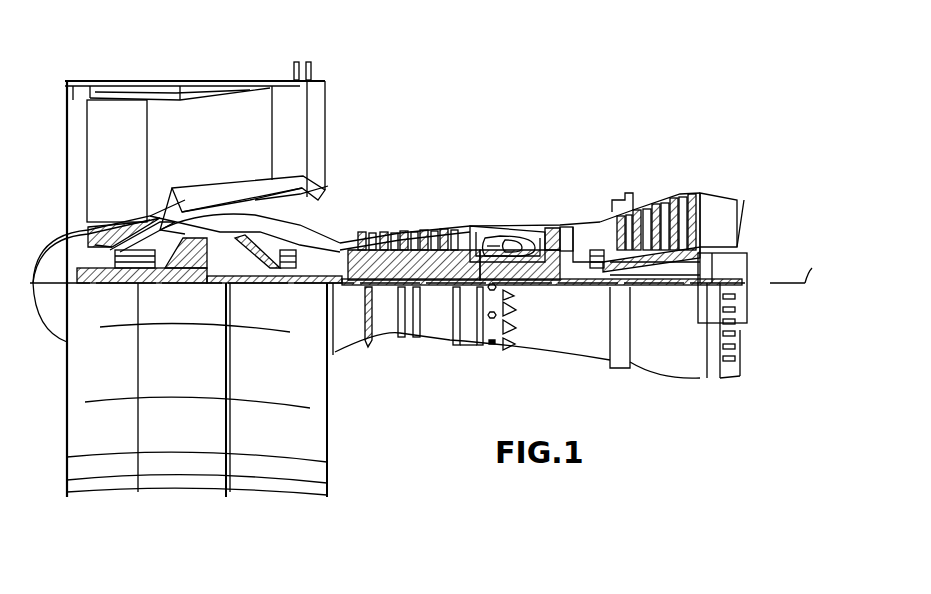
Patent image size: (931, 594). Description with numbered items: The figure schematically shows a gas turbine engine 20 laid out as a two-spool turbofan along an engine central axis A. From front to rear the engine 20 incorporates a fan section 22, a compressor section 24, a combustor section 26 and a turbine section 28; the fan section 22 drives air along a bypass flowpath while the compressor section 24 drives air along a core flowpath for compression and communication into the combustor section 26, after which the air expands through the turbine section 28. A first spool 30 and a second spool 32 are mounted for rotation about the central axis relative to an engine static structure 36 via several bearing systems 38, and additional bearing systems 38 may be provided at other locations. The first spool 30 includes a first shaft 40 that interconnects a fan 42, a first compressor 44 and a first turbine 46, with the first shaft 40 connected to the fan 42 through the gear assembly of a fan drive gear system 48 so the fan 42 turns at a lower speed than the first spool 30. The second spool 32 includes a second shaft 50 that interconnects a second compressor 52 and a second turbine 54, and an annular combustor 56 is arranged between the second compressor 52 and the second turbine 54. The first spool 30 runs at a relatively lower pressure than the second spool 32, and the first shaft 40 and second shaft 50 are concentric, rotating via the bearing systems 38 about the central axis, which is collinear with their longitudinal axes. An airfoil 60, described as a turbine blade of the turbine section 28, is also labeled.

The gas turbine engine 20 is at (528, 112).
The fan section 22 is at (146, 76).
The compressor section 24 is at (366, 216).
The combustor section 26 is at (520, 208).
The turbine section 28 is at (626, 182).
The first spool 30 is at (438, 292).
The second spool 32 is at (470, 248).
The engine static structure 36 is at (467, 350).
The bearing systems 38 is at (293, 285).
The first shaft 40 is at (338, 290).
The fan 42 is at (134, 172).
The first compressor 44 is at (283, 207).
The first turbine 46 is at (657, 212).
The fan drive gear system 48 is at (200, 285).
The second shaft 50 is at (522, 283).
The second compressor 52 is at (413, 240).
The second turbine 54 is at (568, 238).
The annular combustor 56 is at (510, 233).
The airfoil 60 is at (700, 203).